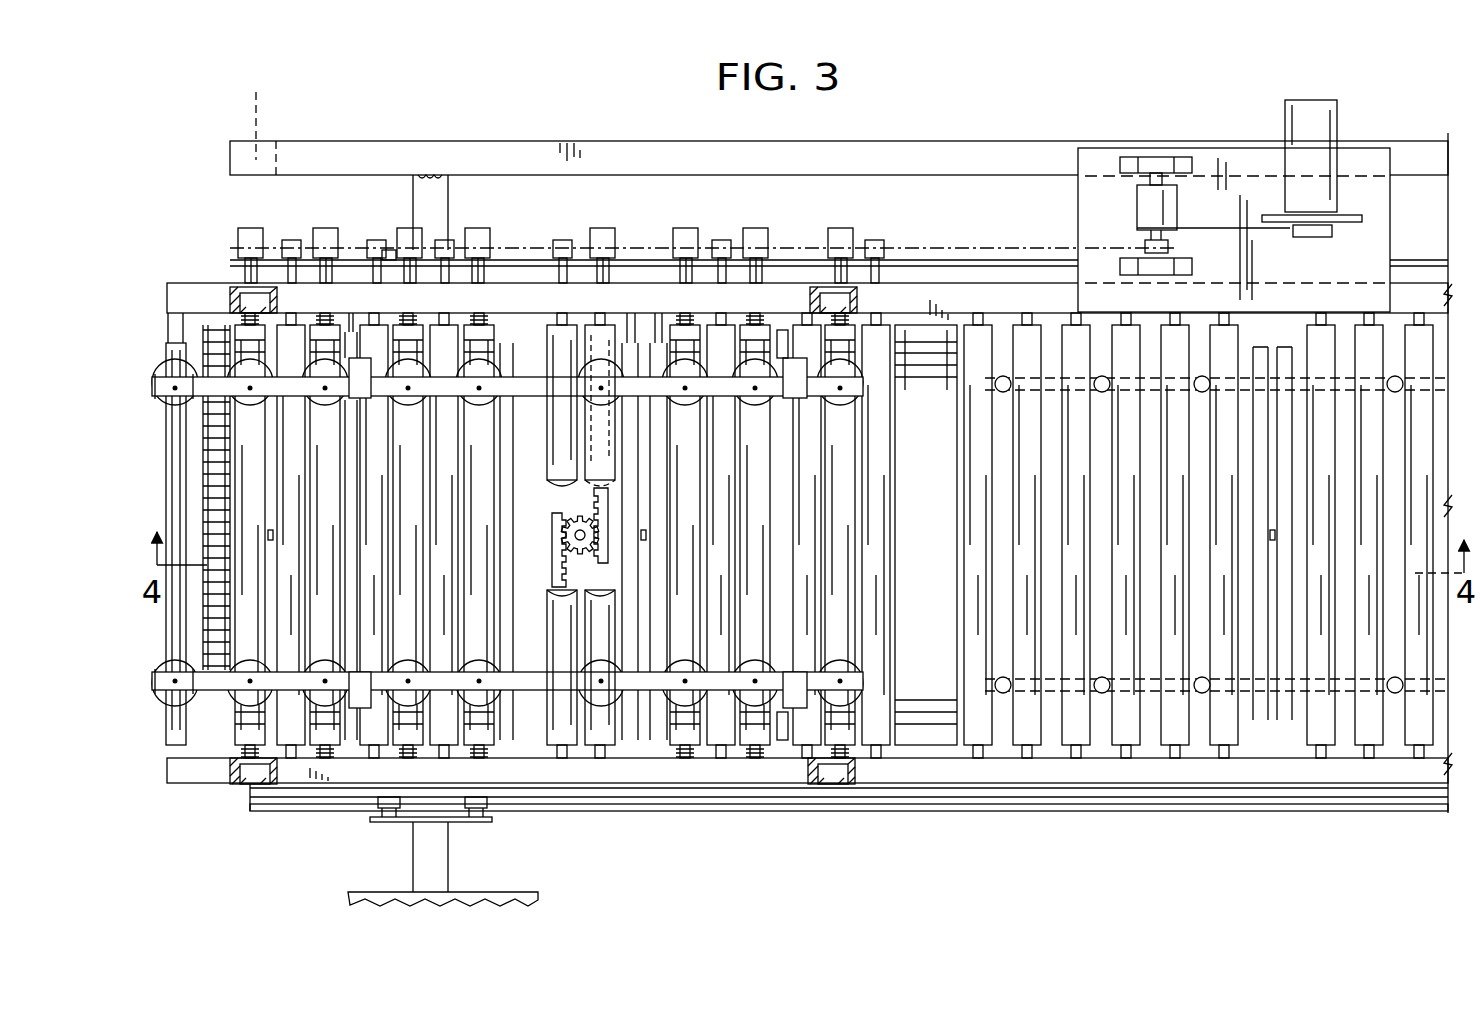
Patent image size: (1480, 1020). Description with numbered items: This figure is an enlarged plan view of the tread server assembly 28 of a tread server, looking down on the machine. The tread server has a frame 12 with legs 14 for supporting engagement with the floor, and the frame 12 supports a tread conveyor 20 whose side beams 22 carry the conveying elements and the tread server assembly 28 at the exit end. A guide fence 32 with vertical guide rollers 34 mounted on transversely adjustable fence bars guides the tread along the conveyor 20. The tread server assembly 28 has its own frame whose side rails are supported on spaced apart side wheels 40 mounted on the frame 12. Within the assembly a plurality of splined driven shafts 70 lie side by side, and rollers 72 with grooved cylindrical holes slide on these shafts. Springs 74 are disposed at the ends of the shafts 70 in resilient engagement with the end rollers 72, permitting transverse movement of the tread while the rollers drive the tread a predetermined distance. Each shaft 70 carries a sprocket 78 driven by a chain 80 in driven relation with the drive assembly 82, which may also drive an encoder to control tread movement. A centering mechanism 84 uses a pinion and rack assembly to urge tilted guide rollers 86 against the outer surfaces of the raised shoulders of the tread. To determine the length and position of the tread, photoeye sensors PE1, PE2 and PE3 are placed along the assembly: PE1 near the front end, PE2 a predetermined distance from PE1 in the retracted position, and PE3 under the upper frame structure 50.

The frame 12 is at (340, 138).
The legs 14 is at (254, 119).
The tread conveyor 20 is at (1334, 786).
The side beams 22 is at (1050, 295).
The tread server assembly 28 is at (549, 760).
The guide fence 32 is at (1348, 372).
The vertical guide rollers 34 is at (1394, 375).
The side wheels 40 is at (389, 250).
The upper frame structure 50 is at (238, 298).
The splined driven shafts 70 is at (612, 320).
The rollers 72 is at (763, 334).
The springs 74 is at (322, 316).
The sprocket 78 is at (316, 246).
The chain 80 is at (932, 256).
The drive assembly 82 is at (1338, 124).
The centering mechanism 84 is at (614, 523).
The tilted guide rollers 86 is at (480, 365).
The photoeye PE1 is at (274, 532).
The photoeye PE2 is at (1269, 536).
The photoeye PE3 is at (648, 538).